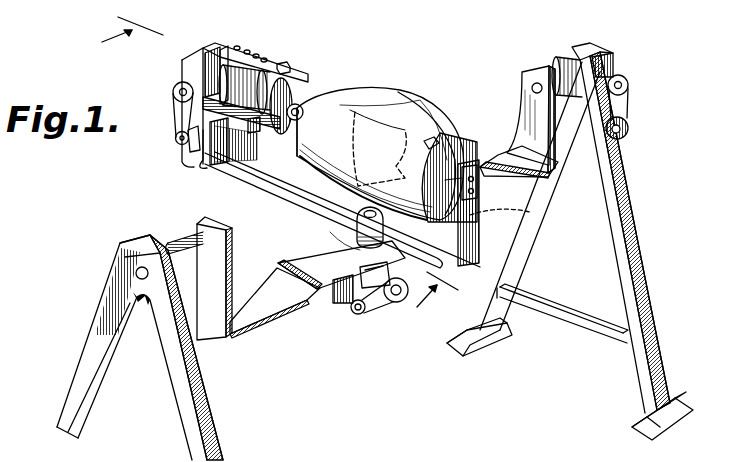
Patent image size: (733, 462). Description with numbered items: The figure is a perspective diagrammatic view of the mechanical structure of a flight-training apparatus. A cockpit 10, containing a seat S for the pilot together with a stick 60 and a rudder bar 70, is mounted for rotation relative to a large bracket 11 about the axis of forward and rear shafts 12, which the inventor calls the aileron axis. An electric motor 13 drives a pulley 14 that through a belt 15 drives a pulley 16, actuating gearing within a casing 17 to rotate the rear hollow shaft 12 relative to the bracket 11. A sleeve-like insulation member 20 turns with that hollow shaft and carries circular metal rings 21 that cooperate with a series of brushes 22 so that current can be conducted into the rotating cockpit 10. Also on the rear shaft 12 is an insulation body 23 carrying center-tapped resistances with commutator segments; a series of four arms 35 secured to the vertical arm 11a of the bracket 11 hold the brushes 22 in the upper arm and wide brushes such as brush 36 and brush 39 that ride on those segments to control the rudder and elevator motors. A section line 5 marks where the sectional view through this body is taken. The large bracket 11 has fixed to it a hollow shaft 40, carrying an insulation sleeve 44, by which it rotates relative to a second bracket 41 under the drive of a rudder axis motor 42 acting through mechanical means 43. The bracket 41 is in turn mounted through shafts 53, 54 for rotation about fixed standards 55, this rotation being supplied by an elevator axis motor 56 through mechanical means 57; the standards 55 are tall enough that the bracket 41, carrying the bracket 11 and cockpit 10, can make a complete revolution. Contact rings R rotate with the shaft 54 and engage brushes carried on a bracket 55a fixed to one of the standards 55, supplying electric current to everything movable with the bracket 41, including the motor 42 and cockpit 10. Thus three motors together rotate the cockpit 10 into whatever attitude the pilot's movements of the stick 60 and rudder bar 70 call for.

The section line 5 is at (280, 161).
The cockpit 10 is at (392, 92).
The large bracket 11 is at (487, 256).
The vertical arm 11a is at (213, 160).
The forward and rear shafts 12 is at (302, 102).
The aileron axis motor 13 is at (190, 150).
The pulley 14 is at (175, 141).
The belt 15 is at (175, 112).
The pulley 16 is at (173, 88).
The casing 17 is at (184, 66).
The sleeve-like insulation member 20 is at (258, 82).
The circular metal rings 21 is at (230, 60).
The brushes 22 is at (250, 45).
The insulation body 23 is at (282, 130).
The arms 35 is at (268, 54).
The brush 36 is at (290, 64).
The brush 39 is at (250, 133).
The hollow shaft 40 is at (320, 215).
The second bracket 41 is at (267, 312).
The rudder axis motor 42 is at (340, 308).
The mechanical means 43 is at (392, 310).
The insulation sleeve 44 is at (345, 245).
The shaft 53 is at (173, 247).
The shaft 54 is at (531, 88).
The fixed standards 55 is at (143, 360).
The bracket 55a is at (598, 52).
The elevator axis motor 56 is at (630, 128).
The mechanical means 57 is at (621, 63).
The stick 60 is at (428, 142).
The rudder bar 70 is at (512, 206).
The contact rings R is at (544, 62).
The seat S is at (382, 128).